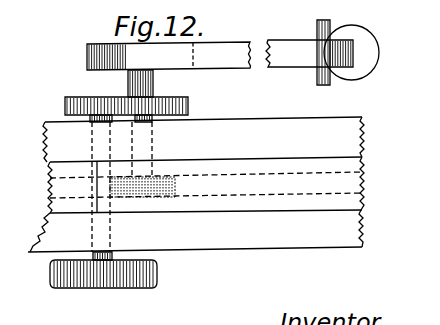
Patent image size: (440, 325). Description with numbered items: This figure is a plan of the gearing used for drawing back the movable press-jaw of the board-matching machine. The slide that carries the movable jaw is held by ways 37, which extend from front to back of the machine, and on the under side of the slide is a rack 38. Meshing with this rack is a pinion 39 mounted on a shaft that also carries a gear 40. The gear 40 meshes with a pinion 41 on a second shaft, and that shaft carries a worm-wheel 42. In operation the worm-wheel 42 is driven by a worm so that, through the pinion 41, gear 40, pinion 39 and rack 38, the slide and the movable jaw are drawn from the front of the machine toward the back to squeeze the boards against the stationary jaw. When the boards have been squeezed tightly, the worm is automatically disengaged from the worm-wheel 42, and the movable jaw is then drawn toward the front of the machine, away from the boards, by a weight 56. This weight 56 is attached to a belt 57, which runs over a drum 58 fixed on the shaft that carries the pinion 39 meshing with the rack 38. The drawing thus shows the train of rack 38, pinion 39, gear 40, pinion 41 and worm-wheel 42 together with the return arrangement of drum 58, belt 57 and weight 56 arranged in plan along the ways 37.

The ways 37 is at (196, 184).
The rack 38 is at (235, 197).
The pinion 39 is at (170, 178).
The gear 40 is at (188, 103).
The pinion 41 is at (72, 97).
The worm-wheel 42 is at (100, 289).
The weight 56 is at (359, 68).
The belt 57 is at (291, 34).
The drum 58 is at (98, 42).